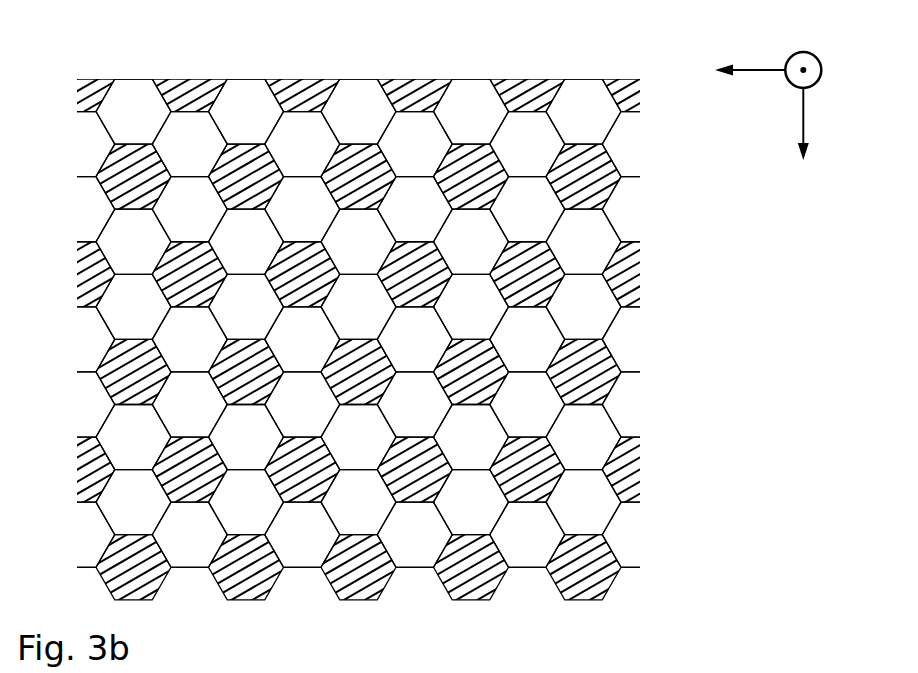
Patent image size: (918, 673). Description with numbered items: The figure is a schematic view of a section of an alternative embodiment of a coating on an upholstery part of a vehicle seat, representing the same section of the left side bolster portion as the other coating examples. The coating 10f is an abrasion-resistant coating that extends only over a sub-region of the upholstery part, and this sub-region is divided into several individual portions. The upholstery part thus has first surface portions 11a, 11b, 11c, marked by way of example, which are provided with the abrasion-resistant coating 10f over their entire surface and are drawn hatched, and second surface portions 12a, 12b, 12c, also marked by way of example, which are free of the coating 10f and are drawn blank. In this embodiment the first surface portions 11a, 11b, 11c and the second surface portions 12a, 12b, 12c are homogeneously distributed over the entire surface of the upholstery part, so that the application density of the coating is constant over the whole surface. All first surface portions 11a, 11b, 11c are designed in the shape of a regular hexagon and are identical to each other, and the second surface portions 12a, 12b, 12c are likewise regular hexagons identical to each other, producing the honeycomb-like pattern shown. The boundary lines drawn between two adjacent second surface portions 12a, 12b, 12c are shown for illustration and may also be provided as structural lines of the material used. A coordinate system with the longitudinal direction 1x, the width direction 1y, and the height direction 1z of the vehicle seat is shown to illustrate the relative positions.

The coating 10f is at (593, 174).
The first surface portion 11a is at (250, 165).
The first surface portion 11b is at (357, 165).
The first surface portion 11c is at (472, 165).
The second surface portion 12a is at (597, 229).
The second surface portion 12b is at (593, 311).
The second surface portion 12c is at (597, 426).
The longitudinal direction 1x is at (805, 123).
The width direction 1y is at (755, 68).
The height direction 1z is at (822, 68).